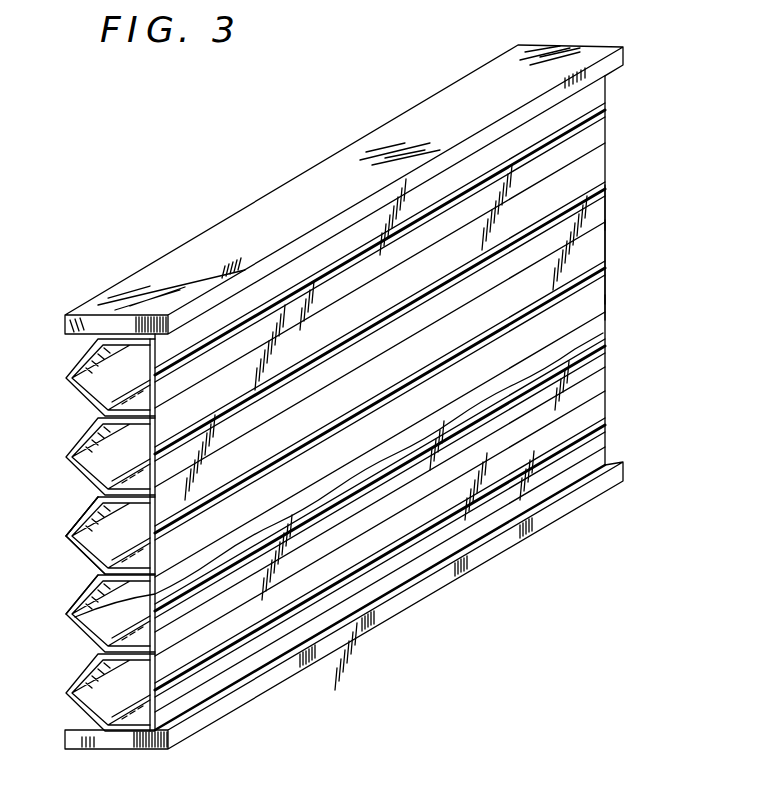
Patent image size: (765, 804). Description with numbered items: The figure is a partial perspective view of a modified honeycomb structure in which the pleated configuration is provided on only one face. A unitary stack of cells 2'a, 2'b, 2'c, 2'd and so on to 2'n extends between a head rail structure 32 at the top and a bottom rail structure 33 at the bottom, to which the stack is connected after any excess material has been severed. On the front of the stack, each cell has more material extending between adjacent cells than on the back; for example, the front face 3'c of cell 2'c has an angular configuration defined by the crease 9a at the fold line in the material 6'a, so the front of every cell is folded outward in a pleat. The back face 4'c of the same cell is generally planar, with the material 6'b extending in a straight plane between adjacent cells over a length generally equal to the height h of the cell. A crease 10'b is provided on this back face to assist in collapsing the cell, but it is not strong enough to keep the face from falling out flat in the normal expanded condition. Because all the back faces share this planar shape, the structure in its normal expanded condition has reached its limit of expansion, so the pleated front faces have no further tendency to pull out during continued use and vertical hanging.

The head rail structure 32 is at (66, 331).
The bottom rail structure 33 is at (65, 746).
The cell 2'a is at (335, 259).
The cell 2'b is at (335, 338).
The cell 2'c is at (335, 419).
The cell 2'd is at (335, 497).
The cell 2'n is at (335, 574).
The material 6'a is at (60, 502).
The material 6'b is at (408, 292).
The front face 3'c is at (56, 539).
The back face 4'c is at (631, 262).
The crease 10'b is at (641, 320).
The crease 9a is at (90, 568).
The height of the cell h is at (627, 208).